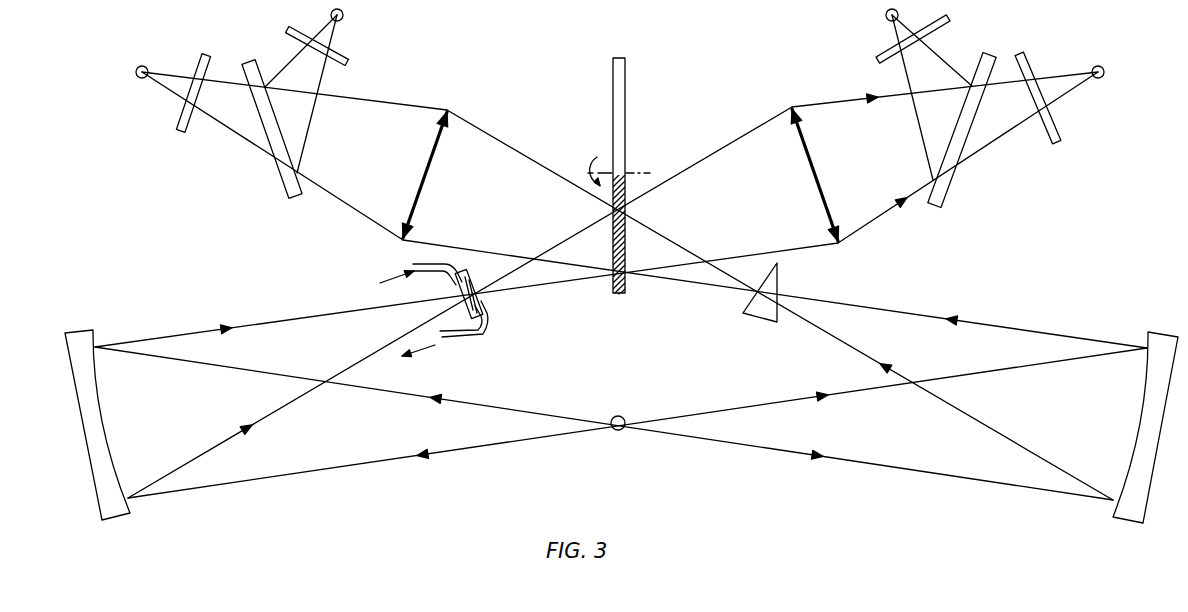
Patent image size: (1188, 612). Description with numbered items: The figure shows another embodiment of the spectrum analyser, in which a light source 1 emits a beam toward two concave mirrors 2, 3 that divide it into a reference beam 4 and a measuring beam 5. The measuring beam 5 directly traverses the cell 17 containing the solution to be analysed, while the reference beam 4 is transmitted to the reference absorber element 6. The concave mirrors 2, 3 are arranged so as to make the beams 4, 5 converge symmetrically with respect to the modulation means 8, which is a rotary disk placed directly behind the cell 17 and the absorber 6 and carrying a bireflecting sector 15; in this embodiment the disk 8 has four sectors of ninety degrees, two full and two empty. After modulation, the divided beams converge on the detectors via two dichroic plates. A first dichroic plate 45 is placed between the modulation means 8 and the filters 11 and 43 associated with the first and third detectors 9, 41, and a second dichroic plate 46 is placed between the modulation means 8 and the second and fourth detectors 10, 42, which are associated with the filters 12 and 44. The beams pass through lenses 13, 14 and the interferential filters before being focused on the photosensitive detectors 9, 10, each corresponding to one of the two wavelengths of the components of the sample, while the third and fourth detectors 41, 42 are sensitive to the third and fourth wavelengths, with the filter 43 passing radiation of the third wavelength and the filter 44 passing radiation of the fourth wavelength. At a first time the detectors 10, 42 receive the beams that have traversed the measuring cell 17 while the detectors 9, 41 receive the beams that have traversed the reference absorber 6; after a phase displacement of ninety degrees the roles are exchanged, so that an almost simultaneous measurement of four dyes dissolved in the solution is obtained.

The light source 1 is at (618, 431).
The concave mirror 2 is at (82, 330).
The concave mirror 3 is at (1162, 335).
The reference beam 4 is at (897, 313).
The measuring beam 5 is at (268, 322).
The reference absorber element 6 is at (762, 312).
The modulation means 8 is at (630, 90).
The photosensitive cell 9 is at (1100, 80).
The photosensitive cell 10 is at (140, 80).
The interferential filter 11 is at (1033, 56).
The interferential filter 12 is at (200, 56).
The lens 13 is at (795, 138).
The lens 14 is at (440, 135).
The bireflecting sector 15 is at (619, 295).
The cell 17 is at (490, 308).
The third detector 41 is at (884, 15).
The fourth detector 42 is at (344, 14).
The filter 43 is at (876, 58).
The filter 44 is at (349, 62).
The first dichroic plate 45 is at (946, 206).
The second dichroic plate 46 is at (288, 193).